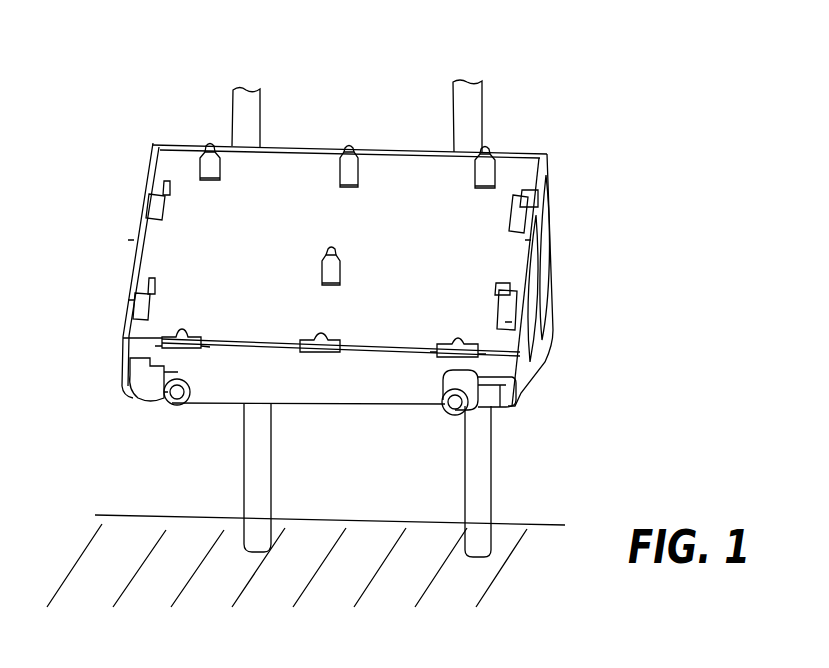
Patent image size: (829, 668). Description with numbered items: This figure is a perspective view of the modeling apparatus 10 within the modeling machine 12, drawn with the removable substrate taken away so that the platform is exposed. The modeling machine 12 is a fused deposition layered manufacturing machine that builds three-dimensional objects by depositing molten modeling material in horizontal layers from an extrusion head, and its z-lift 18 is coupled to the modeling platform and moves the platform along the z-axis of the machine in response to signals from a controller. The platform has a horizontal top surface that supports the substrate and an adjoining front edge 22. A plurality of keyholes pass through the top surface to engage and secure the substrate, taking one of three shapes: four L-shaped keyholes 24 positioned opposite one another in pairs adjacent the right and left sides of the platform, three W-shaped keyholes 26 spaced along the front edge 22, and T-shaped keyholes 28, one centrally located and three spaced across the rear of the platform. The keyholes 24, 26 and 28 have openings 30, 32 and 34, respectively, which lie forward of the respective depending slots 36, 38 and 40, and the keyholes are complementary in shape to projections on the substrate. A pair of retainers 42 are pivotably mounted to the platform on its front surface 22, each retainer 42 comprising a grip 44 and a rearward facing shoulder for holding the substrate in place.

The modeling apparatus 10 is at (588, 223).
The modeling machine 12 is at (214, 515).
The z-lift 18 is at (260, 118).
The front edge 22 is at (354, 395).
The L-shaped keyholes 24 is at (147, 237).
The W-shaped keyholes 26 is at (210, 362).
The T-shaped keyholes 28 is at (209, 192).
The opening 30 is at (155, 207).
The opening 32 is at (228, 345).
The opening 34 is at (207, 168).
The depending slot 36 is at (166, 184).
The depending slot 38 is at (185, 335).
The depending slot 40 is at (211, 146).
The retainers 42 is at (168, 412).
The grip 44 is at (140, 385).